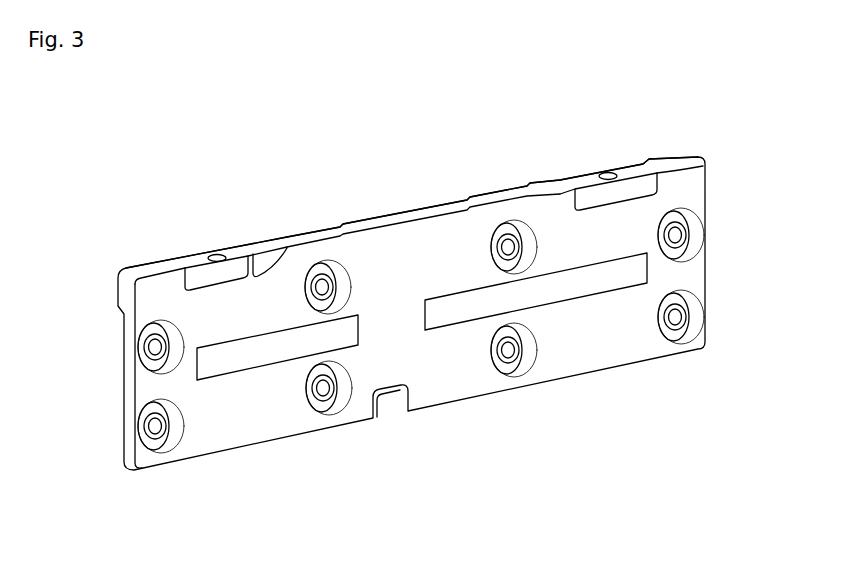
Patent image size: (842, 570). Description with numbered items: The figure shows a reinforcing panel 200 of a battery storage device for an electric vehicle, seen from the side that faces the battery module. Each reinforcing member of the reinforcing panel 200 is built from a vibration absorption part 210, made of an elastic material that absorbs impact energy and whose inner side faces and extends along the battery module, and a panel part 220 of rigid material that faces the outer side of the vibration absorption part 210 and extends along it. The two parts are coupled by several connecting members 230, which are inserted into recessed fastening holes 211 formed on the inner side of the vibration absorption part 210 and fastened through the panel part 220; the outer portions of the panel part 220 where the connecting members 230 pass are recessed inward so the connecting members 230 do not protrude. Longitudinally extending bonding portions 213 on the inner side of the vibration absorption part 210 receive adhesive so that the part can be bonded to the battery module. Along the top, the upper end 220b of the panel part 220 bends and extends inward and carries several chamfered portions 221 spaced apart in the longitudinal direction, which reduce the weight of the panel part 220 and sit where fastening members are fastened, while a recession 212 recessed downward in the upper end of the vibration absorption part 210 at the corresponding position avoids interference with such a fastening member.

The reinforcing panel 200 is at (450, 180).
The vibration absorption part 210 is at (450, 375).
The fastening hole 211 is at (333, 277).
The recession 212 is at (253, 275).
The bonding portion 213 is at (628, 277).
The panel part 220 is at (193, 272).
The upper end of the panel part 220b is at (388, 220).
The chamfered portion 221 is at (234, 252).
The connecting member 230 is at (510, 362).